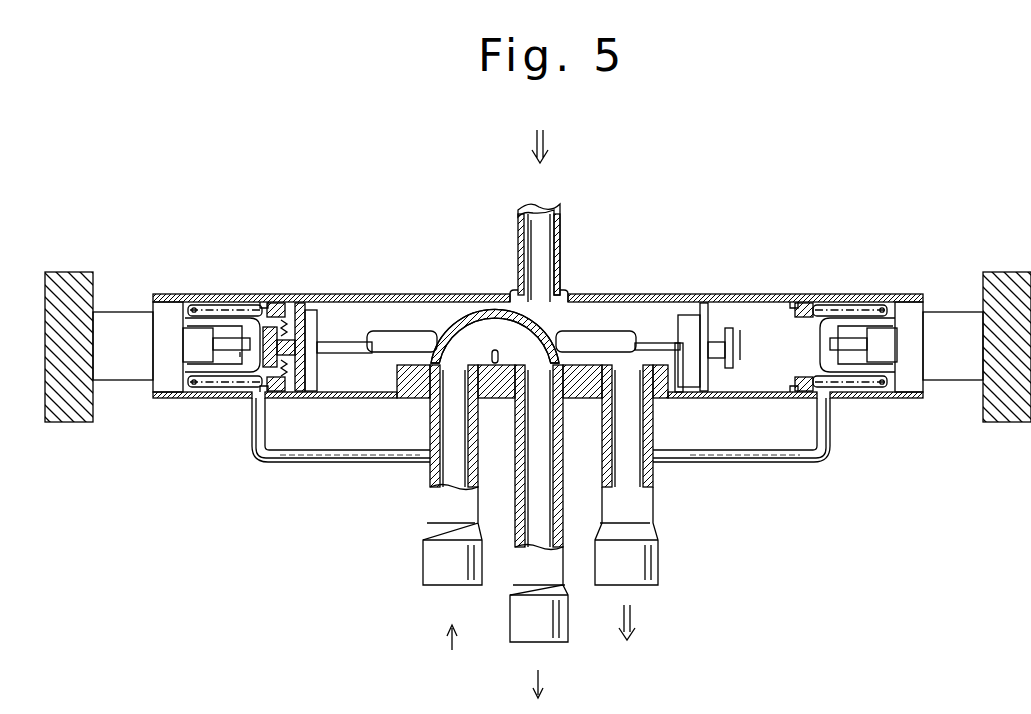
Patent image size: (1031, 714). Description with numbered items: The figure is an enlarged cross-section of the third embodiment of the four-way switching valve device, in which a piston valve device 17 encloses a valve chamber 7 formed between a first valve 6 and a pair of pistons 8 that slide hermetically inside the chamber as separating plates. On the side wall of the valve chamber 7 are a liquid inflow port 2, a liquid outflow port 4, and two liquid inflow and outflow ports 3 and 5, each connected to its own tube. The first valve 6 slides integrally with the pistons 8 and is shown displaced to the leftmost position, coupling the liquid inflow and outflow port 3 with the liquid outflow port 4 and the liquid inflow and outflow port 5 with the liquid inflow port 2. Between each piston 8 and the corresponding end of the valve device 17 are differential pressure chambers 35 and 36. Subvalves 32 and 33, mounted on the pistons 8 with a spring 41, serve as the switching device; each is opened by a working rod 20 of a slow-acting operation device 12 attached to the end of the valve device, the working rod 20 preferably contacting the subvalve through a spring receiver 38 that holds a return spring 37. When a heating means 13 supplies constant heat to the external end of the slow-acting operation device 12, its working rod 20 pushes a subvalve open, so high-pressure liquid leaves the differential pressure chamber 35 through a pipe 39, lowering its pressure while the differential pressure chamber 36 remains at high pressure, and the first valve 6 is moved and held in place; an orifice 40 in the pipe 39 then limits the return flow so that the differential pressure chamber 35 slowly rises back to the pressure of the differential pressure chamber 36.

The liquid inflow port 2 is at (547, 290).
The liquid inflow and outflow port 3 is at (470, 398).
The liquid outflow port 4 is at (553, 400).
The liquid inflow and outflow port 5 is at (650, 400).
The first valve 6 is at (553, 340).
The valve chamber 7 is at (409, 325).
The piston 8 is at (690, 325).
The slow-acting operation device 12 is at (124, 312).
The heating means 13 is at (88, 272).
The piston valve device 17 is at (456, 295).
The working rod 20 is at (215, 352).
The subvalve 32 is at (730, 328).
The subvalve 33 is at (312, 328).
The differential pressure chamber 35 is at (264, 320).
The differential pressure chamber 36 is at (764, 308).
The return spring 37 is at (210, 308).
The spring receiver 38 is at (242, 357).
The pipe 39 is at (281, 462).
The orifice 40 is at (382, 462).
The spring 41 is at (284, 310).